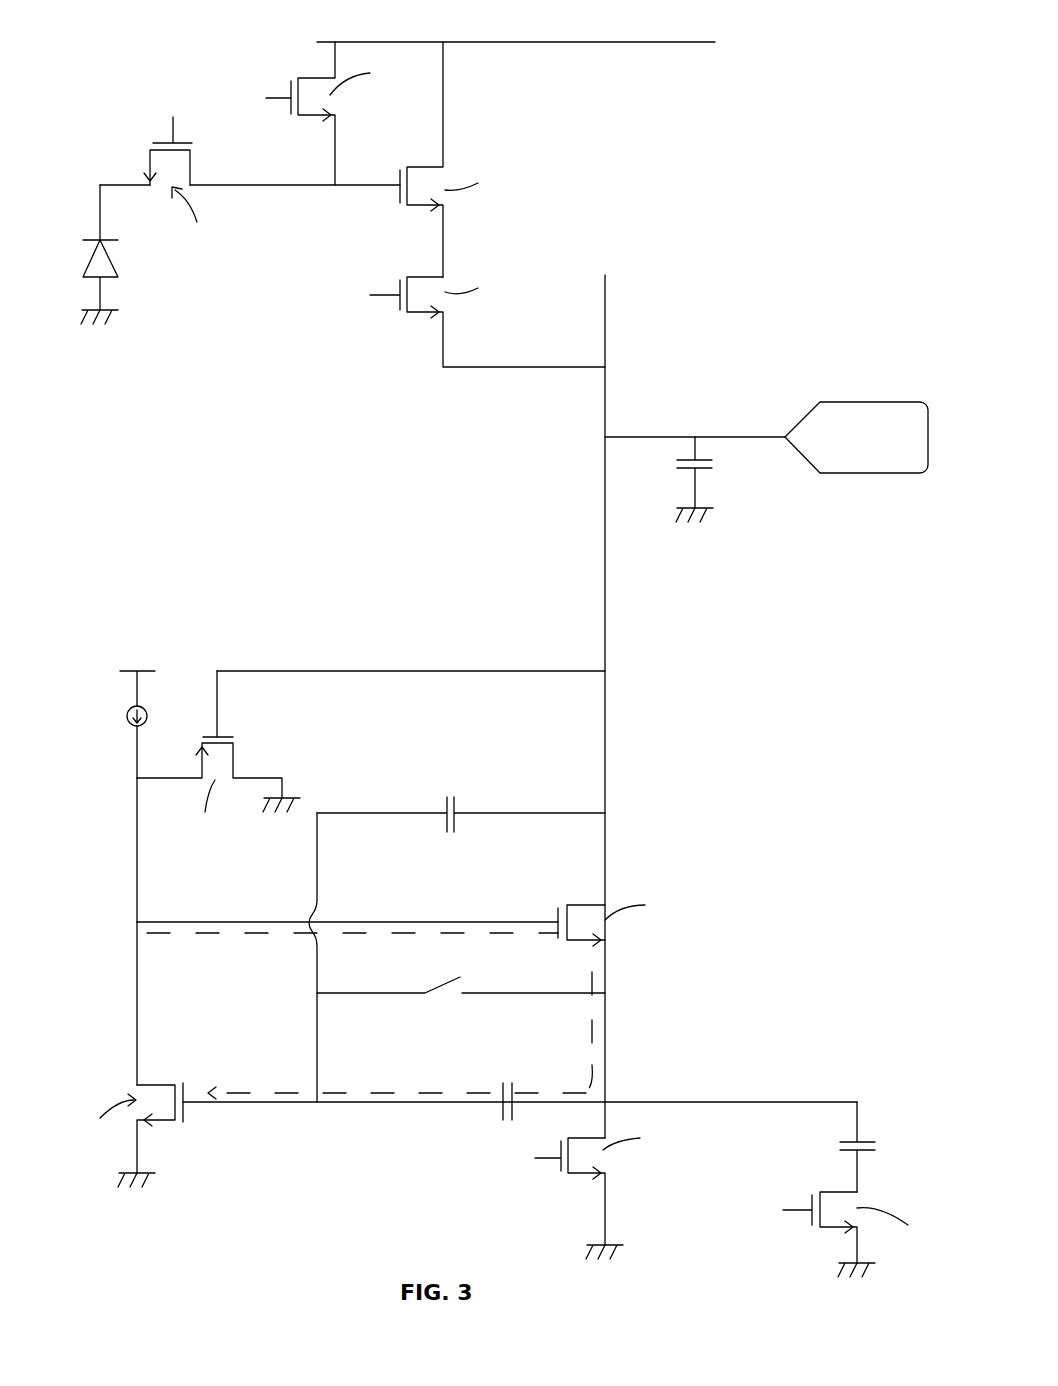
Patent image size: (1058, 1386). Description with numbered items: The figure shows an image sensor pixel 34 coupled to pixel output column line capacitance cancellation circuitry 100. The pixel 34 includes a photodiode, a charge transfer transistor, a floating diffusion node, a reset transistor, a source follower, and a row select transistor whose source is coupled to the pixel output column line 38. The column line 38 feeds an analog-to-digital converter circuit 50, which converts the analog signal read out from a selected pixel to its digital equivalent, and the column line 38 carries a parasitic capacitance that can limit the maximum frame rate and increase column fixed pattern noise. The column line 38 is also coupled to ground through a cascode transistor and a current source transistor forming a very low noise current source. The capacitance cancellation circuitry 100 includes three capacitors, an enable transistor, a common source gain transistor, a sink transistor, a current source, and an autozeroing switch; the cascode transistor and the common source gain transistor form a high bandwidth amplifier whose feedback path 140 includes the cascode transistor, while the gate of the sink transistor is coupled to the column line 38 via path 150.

The pixel 34 is at (140, 66).
The pixel output column line 38 is at (605, 312).
The analog-to-digital converter circuit 50 is at (860, 405).
The pixel output column line capacitance cancellation circuitry 100 is at (78, 690).
The feedback path 140 is at (275, 1095).
The path 150 is at (345, 671).